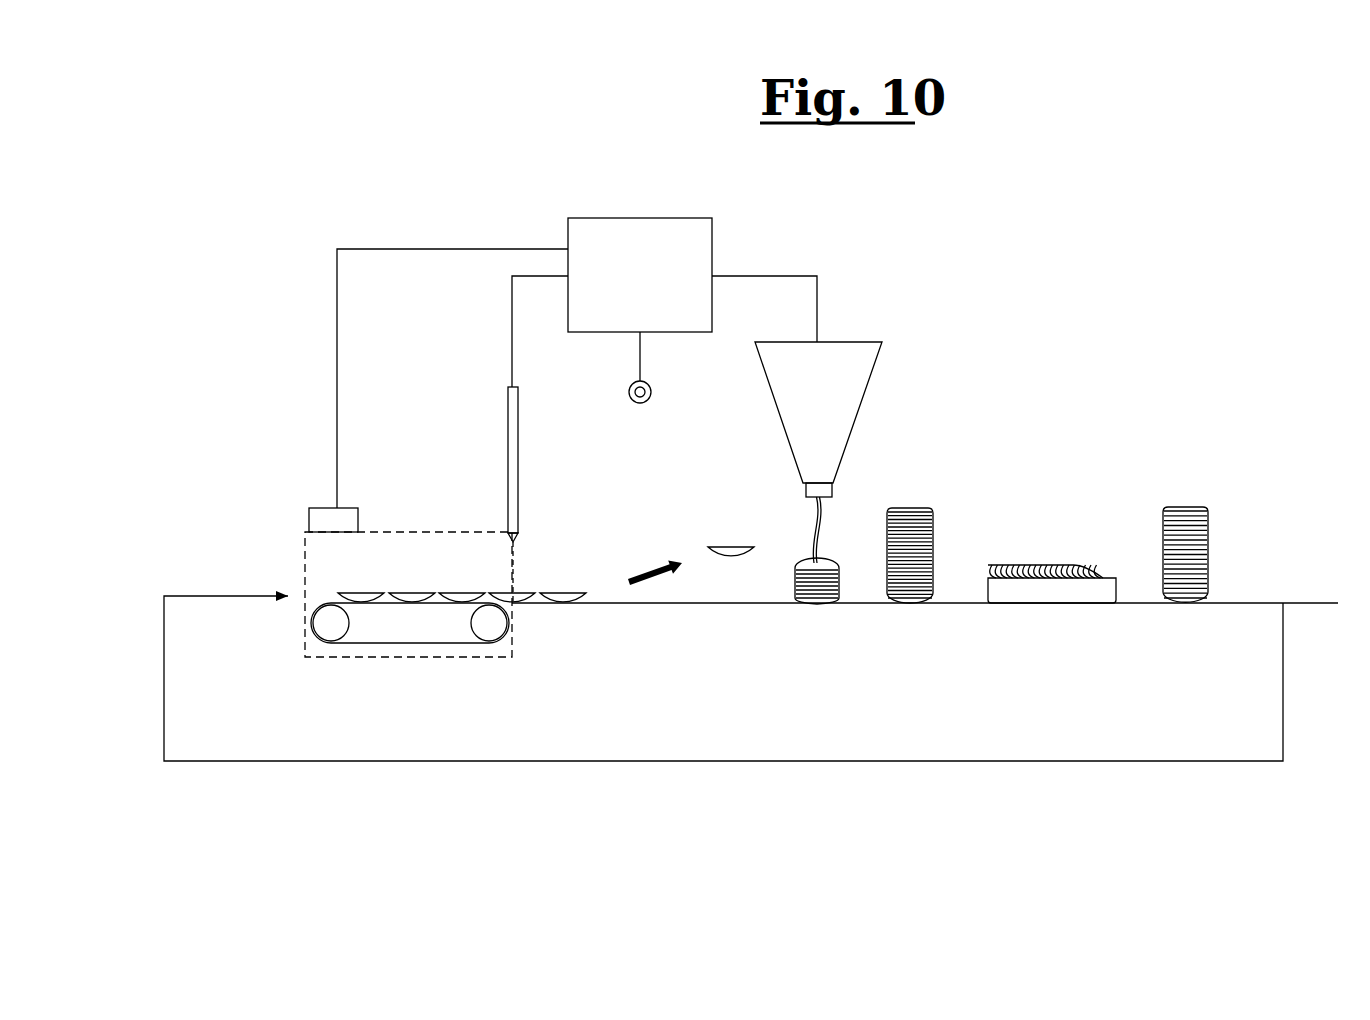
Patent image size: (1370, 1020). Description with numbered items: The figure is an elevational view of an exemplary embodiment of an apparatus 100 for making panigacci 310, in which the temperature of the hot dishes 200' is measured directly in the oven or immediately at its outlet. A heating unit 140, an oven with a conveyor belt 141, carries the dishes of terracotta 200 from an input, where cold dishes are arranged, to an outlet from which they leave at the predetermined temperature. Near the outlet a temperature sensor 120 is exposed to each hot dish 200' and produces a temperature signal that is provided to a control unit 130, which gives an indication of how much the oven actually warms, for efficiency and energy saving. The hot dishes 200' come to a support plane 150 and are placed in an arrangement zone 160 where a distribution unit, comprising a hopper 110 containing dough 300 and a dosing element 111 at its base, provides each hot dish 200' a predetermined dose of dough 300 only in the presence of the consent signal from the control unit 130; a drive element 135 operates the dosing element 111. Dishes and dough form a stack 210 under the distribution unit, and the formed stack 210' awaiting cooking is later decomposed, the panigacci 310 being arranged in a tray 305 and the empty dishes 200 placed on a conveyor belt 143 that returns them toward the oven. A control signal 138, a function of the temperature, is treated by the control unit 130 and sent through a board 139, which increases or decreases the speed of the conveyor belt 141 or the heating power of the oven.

The apparatus 100 is at (1008, 228).
The hopper 110 is at (862, 400).
The dosing element 111 is at (833, 490).
The temperature sensor 120 is at (508, 412).
The control unit 130 is at (625, 238).
The drive element 135 is at (651, 394).
The control signal 138 is at (337, 340).
The board 139 is at (308, 500).
The heating unit 140 is at (305, 560).
The conveyor belt 141 is at (382, 640).
The conveyor belt 143 is at (470, 763).
The support plane 150 is at (724, 603).
The arrangement zone 160 is at (815, 610).
The dishes of terracotta 200 is at (797, 473).
The hot dish 200' is at (649, 534).
The stack 210 is at (838, 561).
The formed stack 210' is at (952, 530).
The dough 300 is at (807, 563).
The tray 305 is at (988, 590).
The panigacci 310 is at (1045, 538).